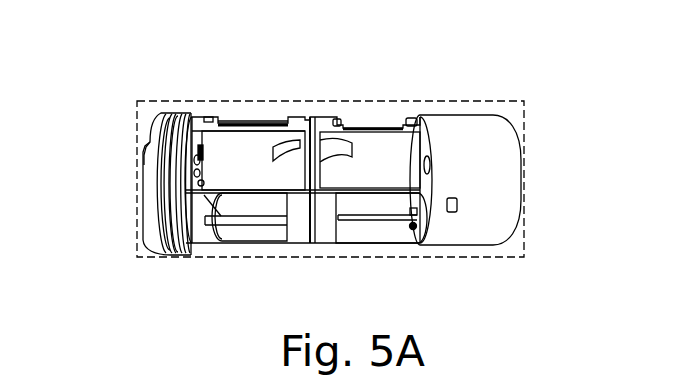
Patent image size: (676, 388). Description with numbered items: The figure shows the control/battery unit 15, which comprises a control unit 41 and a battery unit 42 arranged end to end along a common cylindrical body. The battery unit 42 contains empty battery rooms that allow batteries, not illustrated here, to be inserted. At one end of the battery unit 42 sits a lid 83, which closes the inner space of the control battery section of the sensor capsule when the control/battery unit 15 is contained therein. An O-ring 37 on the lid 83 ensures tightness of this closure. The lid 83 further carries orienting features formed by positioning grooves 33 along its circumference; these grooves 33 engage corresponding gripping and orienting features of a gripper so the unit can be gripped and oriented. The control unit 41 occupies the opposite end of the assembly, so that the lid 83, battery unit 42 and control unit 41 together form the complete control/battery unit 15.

The control/battery unit 15 is at (318, 100).
The positioning grooves 33 is at (147, 153).
The O-ring 37 is at (177, 183).
The control unit 41 is at (457, 117).
The battery unit 42 is at (257, 118).
The lid 83 is at (162, 112).